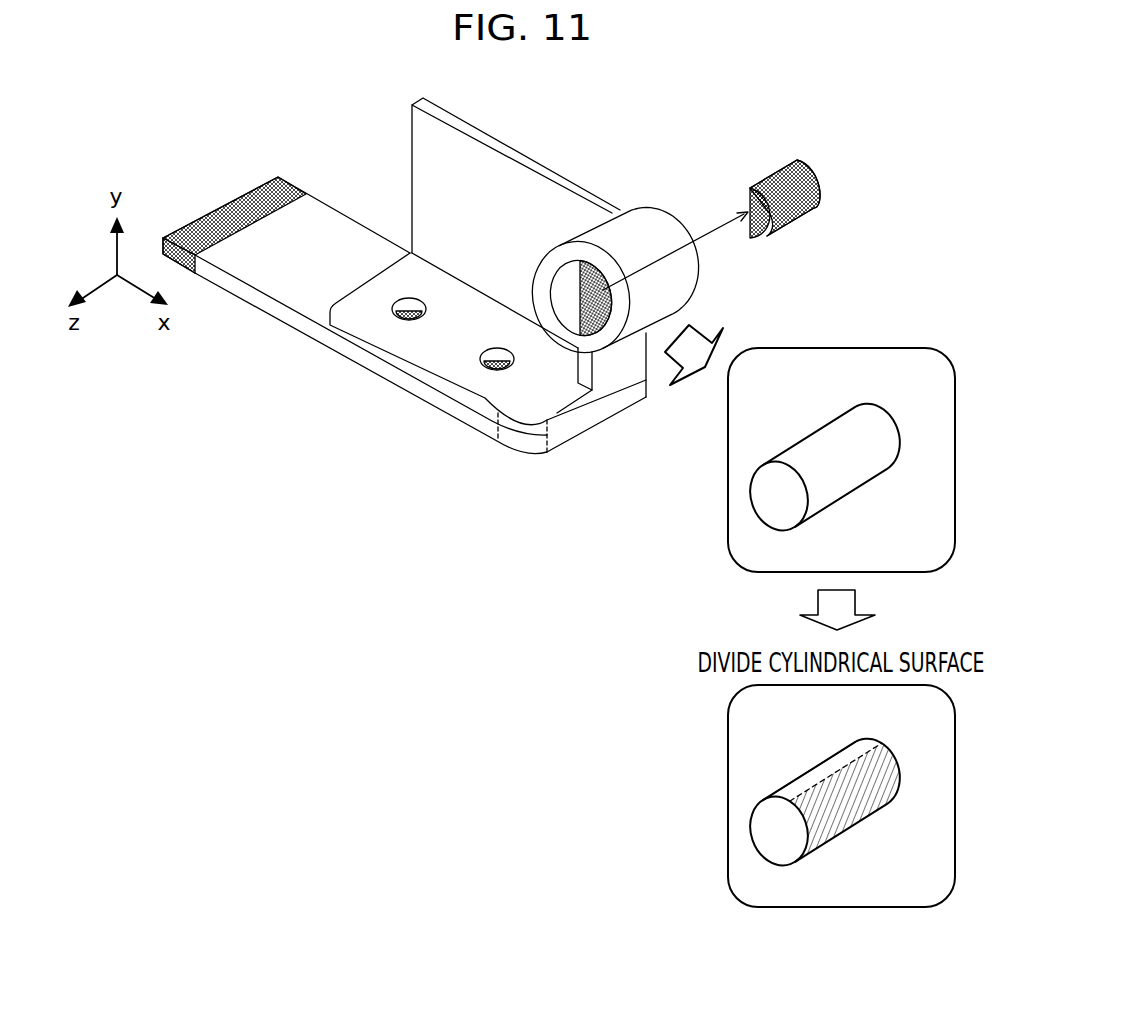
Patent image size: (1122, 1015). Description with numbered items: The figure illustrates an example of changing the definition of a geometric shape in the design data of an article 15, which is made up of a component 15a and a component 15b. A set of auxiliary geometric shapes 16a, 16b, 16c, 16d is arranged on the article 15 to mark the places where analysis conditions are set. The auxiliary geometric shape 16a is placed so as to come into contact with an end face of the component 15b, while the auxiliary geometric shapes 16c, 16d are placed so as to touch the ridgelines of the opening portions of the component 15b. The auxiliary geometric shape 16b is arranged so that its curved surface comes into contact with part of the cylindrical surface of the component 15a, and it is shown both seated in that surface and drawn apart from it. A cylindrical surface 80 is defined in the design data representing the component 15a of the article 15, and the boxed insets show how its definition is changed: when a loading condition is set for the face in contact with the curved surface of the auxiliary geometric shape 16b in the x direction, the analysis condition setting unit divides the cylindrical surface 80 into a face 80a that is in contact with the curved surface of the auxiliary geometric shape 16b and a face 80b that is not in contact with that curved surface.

The article 15 is at (628, 135).
The component 15a is at (525, 157).
The component 15b is at (337, 211).
The auxiliary geometric shape 16a is at (207, 213).
The auxiliary geometric shape 16b is at (607, 303).
The auxiliary geometric shape 16c is at (393, 313).
The auxiliary geometric shape 16d is at (482, 359).
The cylindrical surface 80 is at (807, 440).
The face 80a is at (890, 748).
The face 80b is at (815, 772).